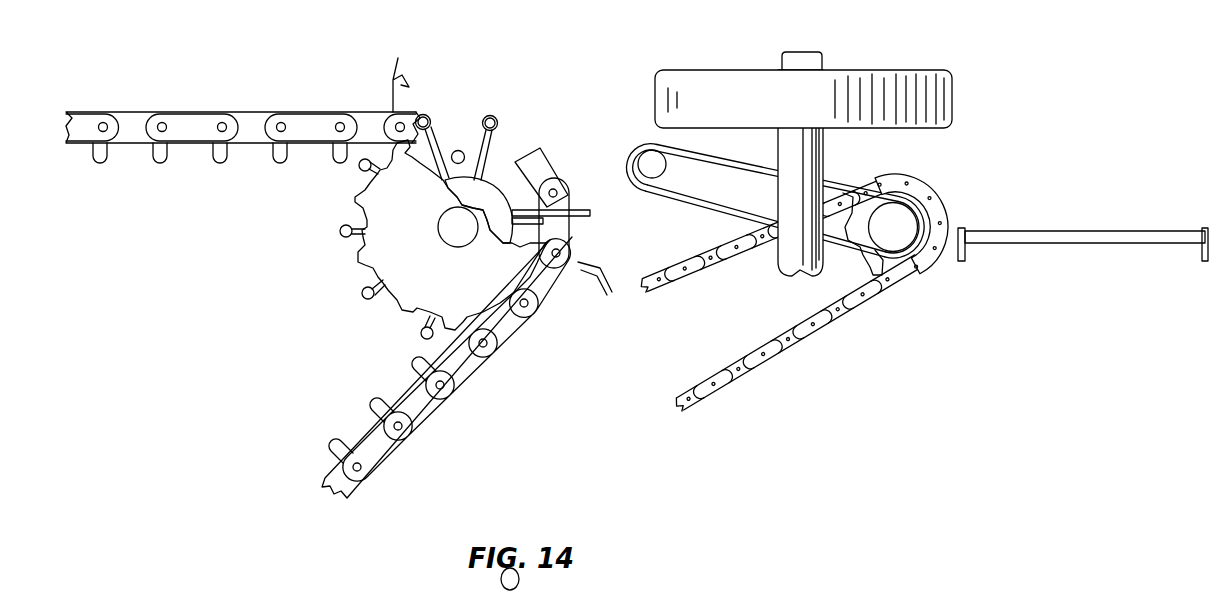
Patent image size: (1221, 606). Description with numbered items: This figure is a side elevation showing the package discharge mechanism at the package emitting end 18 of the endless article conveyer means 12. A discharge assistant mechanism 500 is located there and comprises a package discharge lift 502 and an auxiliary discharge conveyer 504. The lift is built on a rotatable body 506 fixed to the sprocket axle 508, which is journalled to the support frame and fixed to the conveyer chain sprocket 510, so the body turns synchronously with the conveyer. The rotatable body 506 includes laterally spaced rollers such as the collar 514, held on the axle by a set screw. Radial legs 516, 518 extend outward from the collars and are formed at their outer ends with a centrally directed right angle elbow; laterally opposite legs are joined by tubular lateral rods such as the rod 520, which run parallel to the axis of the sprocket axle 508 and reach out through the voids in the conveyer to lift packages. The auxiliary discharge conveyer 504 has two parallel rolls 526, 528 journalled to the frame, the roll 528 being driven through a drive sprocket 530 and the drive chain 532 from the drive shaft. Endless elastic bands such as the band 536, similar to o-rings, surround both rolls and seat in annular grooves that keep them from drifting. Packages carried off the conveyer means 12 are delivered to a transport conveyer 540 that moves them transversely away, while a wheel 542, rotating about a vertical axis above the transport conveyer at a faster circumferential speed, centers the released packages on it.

The endless article conveyer means 12 is at (157, 165).
The package emitting end 18 is at (245, 84).
The discharge assistant mechanism 500 is at (716, 45).
The package discharge lift 502 is at (427, 60).
The auxiliary discharge conveyer 504 is at (892, 153).
The rotatable body 506 is at (497, 170).
The sprocket axle 508 is at (436, 232).
The conveyer chain sprocket 510 is at (413, 288).
The collar 514 is at (560, 214).
The radial leg 516 is at (430, 128).
The radial leg 518 is at (493, 142).
The lateral rod 520 is at (492, 116).
The roll 526 is at (650, 168).
The roll 528 is at (893, 222).
The chain ring 530 is at (905, 197).
The drive chain 532 is at (810, 337).
The endless band 536 is at (737, 168).
The transport conveyer 540 is at (1072, 233).
The wheel 542 is at (952, 85).